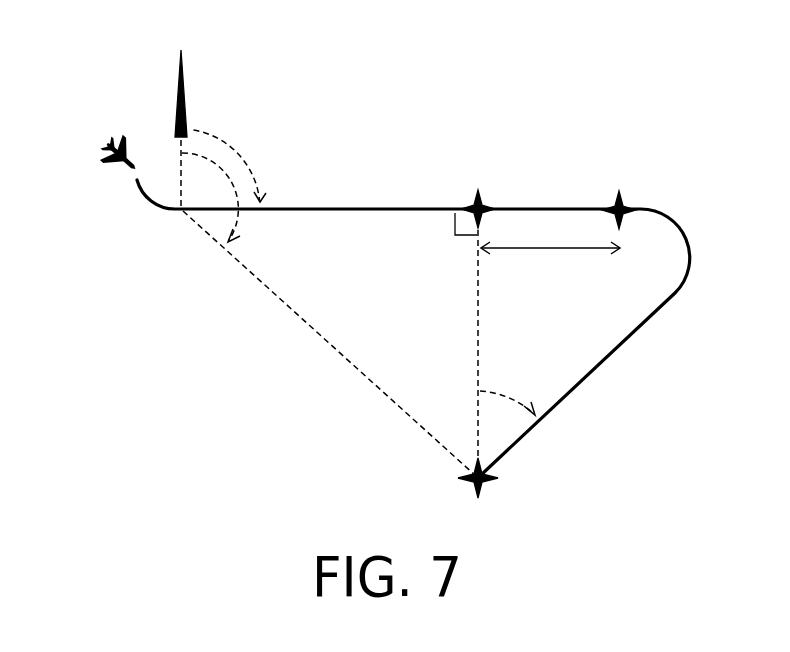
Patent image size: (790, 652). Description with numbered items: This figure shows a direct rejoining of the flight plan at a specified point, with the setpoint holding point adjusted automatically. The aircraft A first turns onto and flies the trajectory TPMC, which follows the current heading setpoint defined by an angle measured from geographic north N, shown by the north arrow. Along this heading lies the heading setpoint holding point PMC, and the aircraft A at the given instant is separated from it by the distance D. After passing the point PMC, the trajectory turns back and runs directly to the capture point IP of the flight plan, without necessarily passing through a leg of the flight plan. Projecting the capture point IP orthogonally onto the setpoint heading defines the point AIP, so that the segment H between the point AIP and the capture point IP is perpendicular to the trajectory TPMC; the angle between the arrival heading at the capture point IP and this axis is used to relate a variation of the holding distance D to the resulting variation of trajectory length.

The aircraft A is at (105, 165).
The geographic north N is at (180, 116).
The trajectory to the setpoint point TPMC is at (340, 207).
The orthogonal projection point of the capture point AIP is at (478, 191).
The heading setpoint holding point PMC is at (618, 191).
The capture point IP is at (460, 475).
The setpoint heading holding distance D is at (550, 260).
The distance between IP and AIP H is at (461, 343).